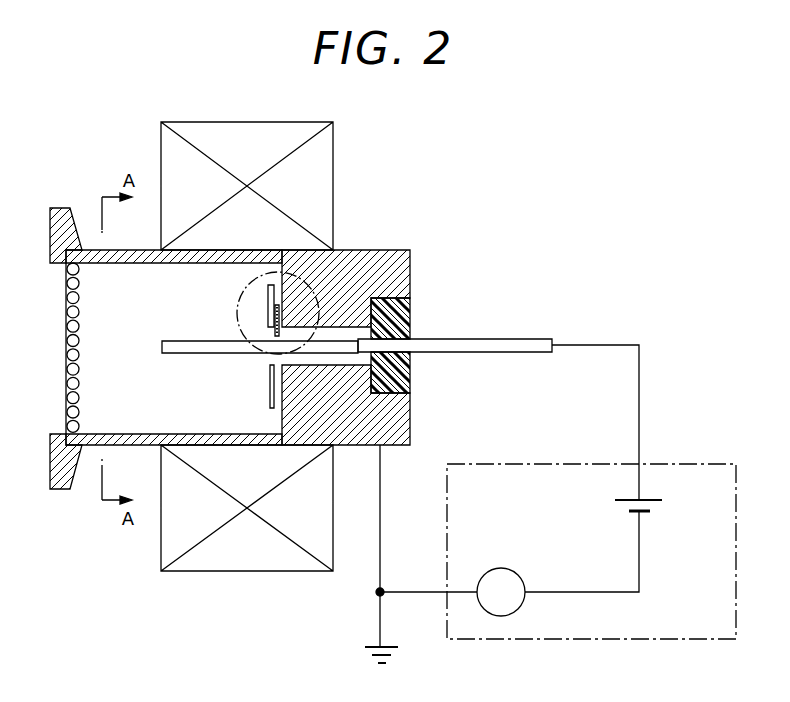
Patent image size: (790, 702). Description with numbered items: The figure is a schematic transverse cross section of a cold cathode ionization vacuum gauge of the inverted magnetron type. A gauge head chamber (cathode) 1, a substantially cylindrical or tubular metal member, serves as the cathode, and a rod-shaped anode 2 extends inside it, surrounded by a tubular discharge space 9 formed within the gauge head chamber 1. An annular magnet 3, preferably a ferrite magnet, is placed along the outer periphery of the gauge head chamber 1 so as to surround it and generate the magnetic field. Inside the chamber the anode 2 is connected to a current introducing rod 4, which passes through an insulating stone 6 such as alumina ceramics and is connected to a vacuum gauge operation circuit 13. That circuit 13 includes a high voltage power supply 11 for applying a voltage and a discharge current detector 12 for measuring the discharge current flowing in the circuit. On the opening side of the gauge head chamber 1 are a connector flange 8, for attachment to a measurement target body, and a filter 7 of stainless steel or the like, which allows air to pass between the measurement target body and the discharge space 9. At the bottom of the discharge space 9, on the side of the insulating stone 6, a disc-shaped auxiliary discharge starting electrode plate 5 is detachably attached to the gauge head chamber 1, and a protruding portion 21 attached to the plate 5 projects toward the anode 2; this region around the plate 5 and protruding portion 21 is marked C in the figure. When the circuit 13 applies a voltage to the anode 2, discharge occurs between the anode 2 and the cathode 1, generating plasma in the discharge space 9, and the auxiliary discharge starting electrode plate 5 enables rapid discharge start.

The gauge head chamber (cathode) 1 is at (384, 250).
The anode 2 is at (169, 355).
The magnet 3 is at (285, 130).
The current introducing rod 4 is at (535, 338).
The auxiliary discharge starting electrode plate 5 is at (267, 293).
The insulating stone 6 is at (412, 315).
The filter 7 is at (66, 323).
The connector flange 8 is at (62, 208).
The discharge space 9 is at (110, 293).
The high voltage power supply 11 is at (628, 506).
The discharge current detector 12 is at (508, 567).
The vacuum gauge operation circuit 13 is at (708, 464).
The protruding portion 21 is at (273, 326).
The region C is at (237, 299).